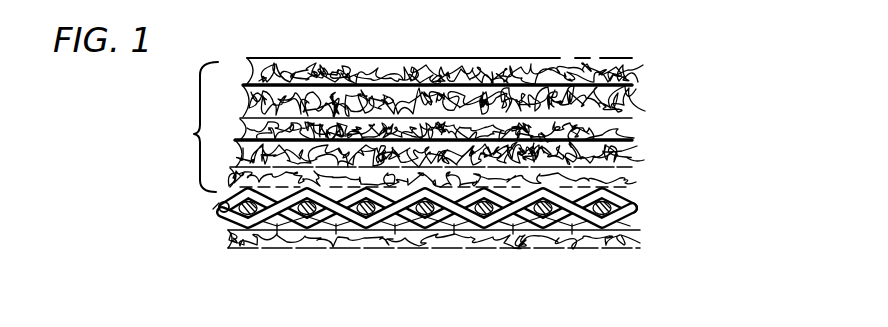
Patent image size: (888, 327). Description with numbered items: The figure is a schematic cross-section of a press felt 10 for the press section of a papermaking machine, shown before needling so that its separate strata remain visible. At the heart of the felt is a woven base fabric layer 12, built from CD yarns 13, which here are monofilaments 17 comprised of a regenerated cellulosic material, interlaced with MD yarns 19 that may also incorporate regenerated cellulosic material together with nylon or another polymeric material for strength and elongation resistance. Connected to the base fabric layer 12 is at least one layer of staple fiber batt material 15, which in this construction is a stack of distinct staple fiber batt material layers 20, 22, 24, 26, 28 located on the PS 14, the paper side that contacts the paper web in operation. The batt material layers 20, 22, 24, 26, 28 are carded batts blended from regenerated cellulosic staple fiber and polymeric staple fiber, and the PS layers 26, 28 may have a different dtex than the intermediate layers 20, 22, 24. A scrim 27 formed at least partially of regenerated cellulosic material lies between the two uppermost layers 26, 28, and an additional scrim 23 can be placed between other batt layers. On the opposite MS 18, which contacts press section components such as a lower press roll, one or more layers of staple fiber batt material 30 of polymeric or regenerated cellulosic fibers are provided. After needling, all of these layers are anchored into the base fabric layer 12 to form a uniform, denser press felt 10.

The press felt 10 is at (722, 76).
The base fabric layer 12 is at (447, 244).
The CD yarns 13 is at (297, 231).
The PS 14 is at (493, 54).
The staple fiber batt material layer 15 is at (187, 127).
The monofilaments 17 is at (366, 236).
The MS 18 is at (500, 251).
The MD yarns 19 is at (217, 208).
The staple fiber batt material layer 20 is at (634, 168).
The staple fiber batt material layer 22 is at (632, 148).
The scrim 23 is at (626, 132).
The staple fiber batt material layer 24 is at (630, 126).
The staple fiber batt material layer 26 is at (628, 97).
The scrim 27 is at (626, 81).
The staple fiber batt material layer 28 is at (626, 66).
The staple fiber batt material layer 30 is at (466, 270).